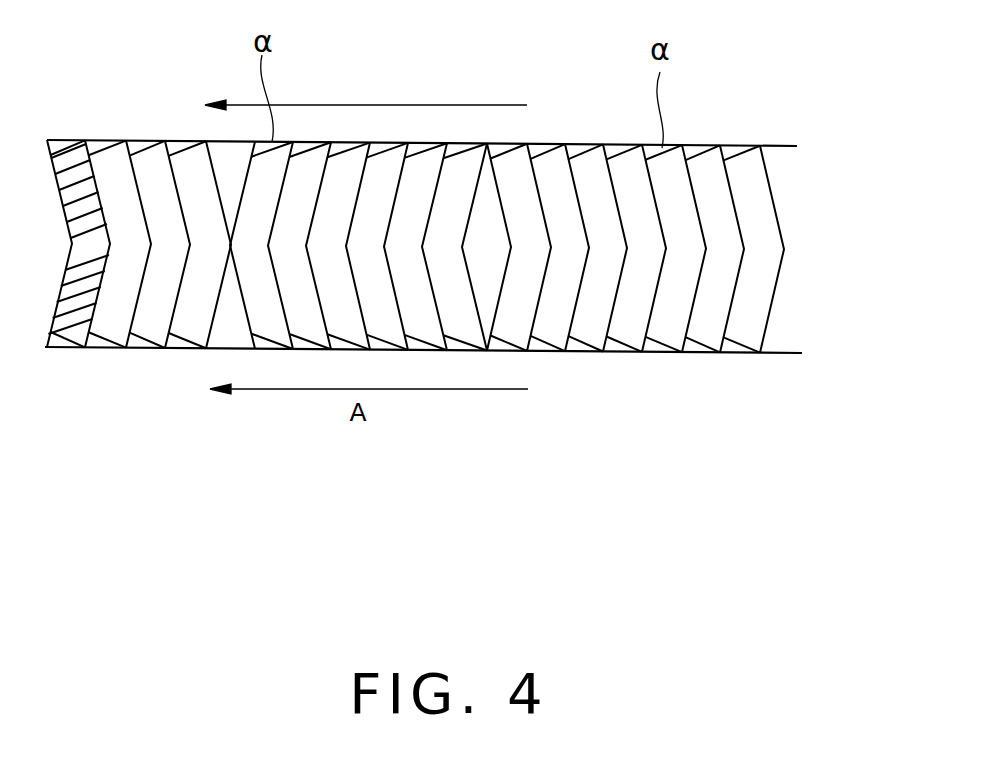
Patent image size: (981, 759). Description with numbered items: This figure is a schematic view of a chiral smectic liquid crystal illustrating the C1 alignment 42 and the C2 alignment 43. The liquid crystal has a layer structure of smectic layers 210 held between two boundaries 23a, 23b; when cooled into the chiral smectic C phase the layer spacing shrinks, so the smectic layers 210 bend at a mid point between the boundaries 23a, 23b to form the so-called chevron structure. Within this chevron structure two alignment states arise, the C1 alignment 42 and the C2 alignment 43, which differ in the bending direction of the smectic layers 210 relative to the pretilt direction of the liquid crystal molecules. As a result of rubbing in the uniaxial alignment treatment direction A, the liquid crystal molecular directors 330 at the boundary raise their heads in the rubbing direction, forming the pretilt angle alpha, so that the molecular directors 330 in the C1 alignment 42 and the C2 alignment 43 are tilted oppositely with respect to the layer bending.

The smectic layer 210 is at (462, 270).
The upper edge of belt 23a is at (693, 143).
The lower edge of belt 23b is at (670, 352).
The liquid crystal molecular director 330 is at (390, 143).
The C1 alignment 42 is at (43, 457).
The C2 alignment 43 is at (252, 457).